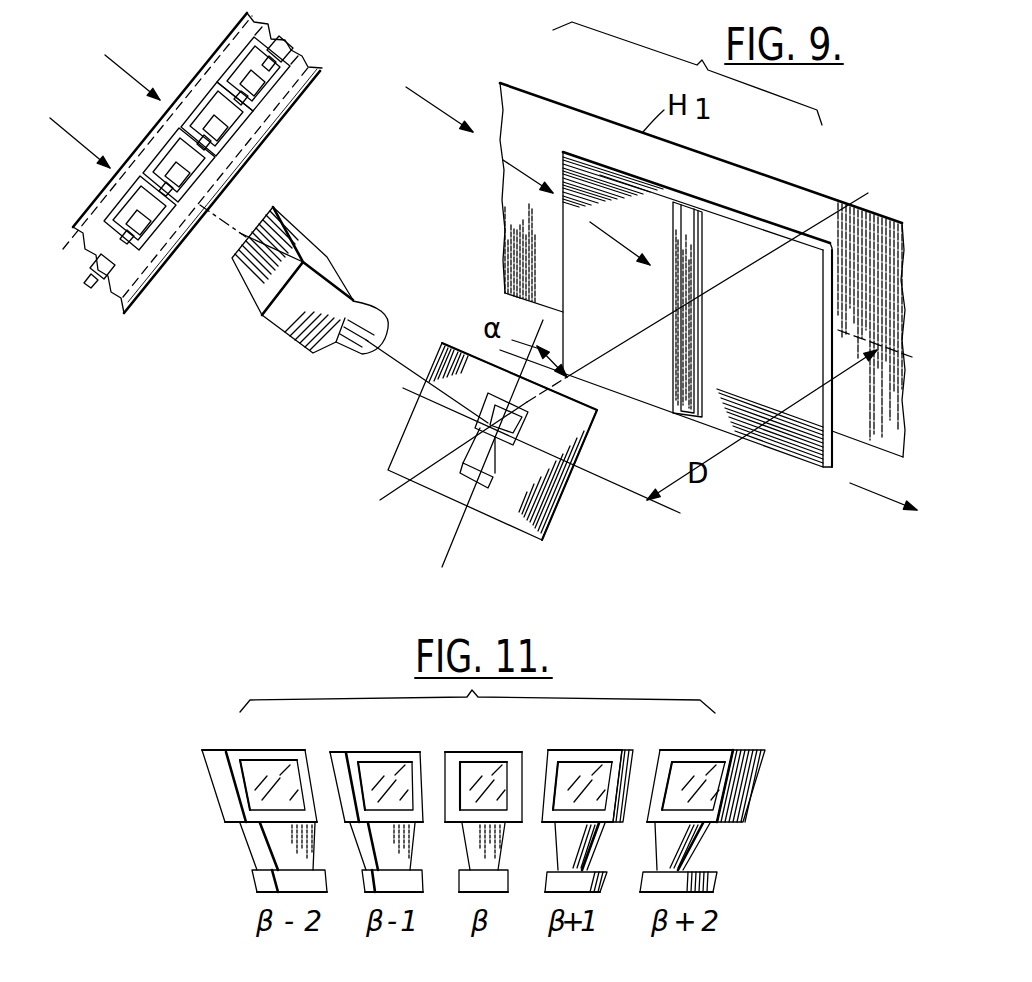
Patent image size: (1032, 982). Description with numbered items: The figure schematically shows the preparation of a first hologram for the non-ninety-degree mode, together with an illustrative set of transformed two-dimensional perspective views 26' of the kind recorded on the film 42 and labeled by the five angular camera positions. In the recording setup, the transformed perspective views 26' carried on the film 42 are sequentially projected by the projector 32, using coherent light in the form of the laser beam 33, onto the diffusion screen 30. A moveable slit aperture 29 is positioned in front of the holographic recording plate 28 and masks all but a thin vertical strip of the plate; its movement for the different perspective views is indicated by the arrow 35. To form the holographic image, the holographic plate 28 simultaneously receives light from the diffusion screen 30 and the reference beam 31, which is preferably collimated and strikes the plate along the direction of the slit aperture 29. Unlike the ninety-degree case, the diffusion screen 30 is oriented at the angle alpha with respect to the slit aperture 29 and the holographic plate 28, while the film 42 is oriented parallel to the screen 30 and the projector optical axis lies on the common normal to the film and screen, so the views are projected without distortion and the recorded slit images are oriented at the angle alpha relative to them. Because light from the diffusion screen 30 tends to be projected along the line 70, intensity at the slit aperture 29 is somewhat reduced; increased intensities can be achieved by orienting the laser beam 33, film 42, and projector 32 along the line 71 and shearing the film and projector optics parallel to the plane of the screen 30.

In FIG. 9, the transformed two-dimensional perspective view 26' is at (306, 291).
In FIG. 11, the transformed two-dimensional perspective view 26' is at (483, 798).
In FIG. 9, the holographic recording plate 28 is at (518, 243).
In FIG. 9, the slit aperture 29 is at (676, 393).
In FIG. 9, the diffusion screen 30 is at (558, 507).
In FIG. 9, the reference beam 31 is at (424, 103).
In FIG. 9, the projector 32 is at (280, 330).
In FIG. 9, the laser beam 33 is at (130, 87).
In FIG. 9, the arrow 35 is at (862, 488).
In FIG. 9, the film 42 is at (213, 70).
In FIG. 9, the line 70 is at (397, 362).
In FIG. 9, the line 71 is at (608, 353).